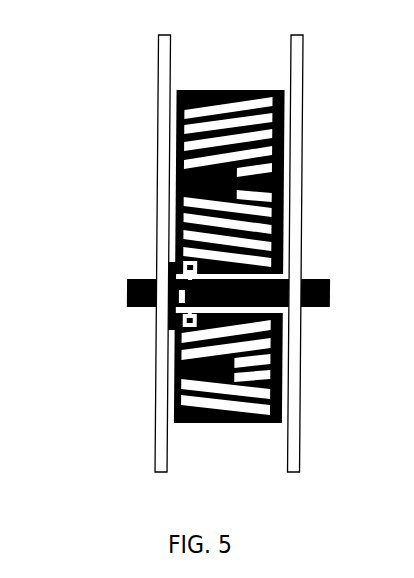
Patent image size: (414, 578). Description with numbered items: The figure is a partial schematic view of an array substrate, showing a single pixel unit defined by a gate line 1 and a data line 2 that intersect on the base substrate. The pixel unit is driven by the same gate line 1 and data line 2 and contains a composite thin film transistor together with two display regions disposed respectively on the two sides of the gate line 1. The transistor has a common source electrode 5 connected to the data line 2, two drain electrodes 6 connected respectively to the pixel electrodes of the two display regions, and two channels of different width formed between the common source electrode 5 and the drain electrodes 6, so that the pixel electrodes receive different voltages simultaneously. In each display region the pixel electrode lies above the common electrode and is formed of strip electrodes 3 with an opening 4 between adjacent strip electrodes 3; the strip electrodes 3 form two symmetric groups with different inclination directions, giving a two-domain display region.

The gate line 1 is at (127, 290).
The data line 2 is at (157, 102).
The strip electrode 3 is at (176, 141).
The opening 4 is at (203, 160).
The common source electrode 5 is at (180, 298).
The drain electrode 6 is at (183, 268).